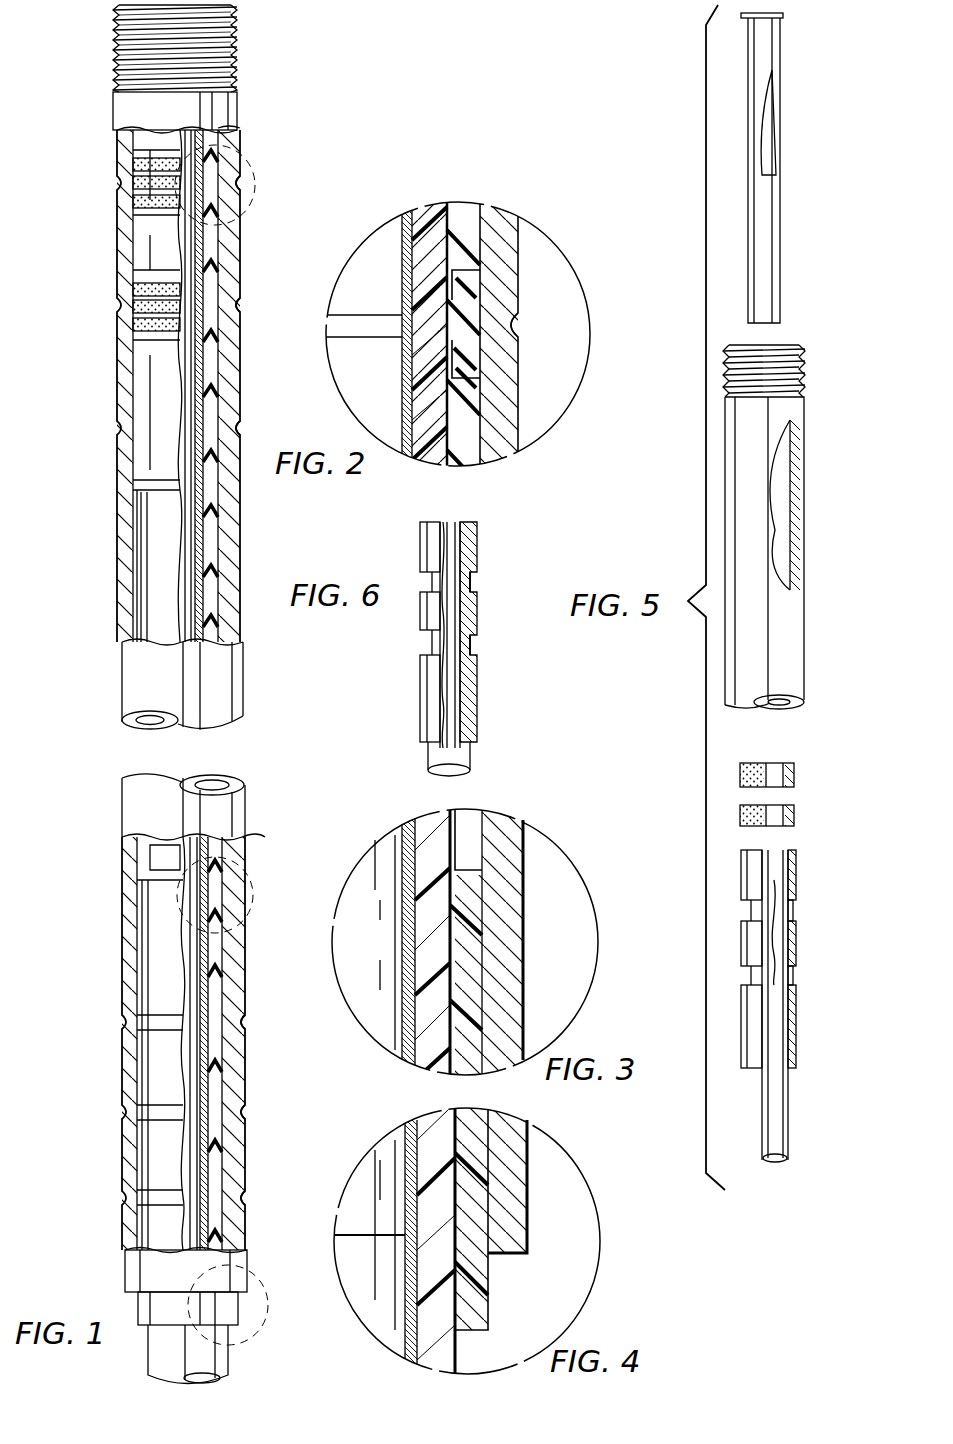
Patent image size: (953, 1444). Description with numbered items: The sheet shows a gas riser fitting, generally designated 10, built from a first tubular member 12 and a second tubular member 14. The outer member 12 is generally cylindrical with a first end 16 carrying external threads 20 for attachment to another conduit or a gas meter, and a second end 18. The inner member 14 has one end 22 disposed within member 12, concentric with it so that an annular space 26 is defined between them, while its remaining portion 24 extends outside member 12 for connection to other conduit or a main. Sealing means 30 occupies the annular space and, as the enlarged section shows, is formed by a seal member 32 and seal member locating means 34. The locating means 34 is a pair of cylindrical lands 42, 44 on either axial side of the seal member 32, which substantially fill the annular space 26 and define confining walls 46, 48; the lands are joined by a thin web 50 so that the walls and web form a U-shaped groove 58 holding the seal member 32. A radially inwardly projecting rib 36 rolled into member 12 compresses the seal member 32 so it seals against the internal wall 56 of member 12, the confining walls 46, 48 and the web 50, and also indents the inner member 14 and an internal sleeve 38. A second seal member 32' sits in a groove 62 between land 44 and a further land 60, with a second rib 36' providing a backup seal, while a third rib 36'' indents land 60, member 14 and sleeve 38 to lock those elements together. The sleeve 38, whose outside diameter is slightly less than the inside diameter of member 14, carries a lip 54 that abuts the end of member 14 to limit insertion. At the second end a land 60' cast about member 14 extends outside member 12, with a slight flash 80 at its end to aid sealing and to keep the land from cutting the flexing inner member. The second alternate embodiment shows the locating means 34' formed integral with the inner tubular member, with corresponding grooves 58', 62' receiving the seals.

In FIG. 1, the tool assembly 10 is at (281, 72).
In FIG. 1, the first tubular member 12 is at (125, 140).
In FIG. 2, the first tubular member 12 is at (500, 255).
In FIG. 3, the first tubular member 12 is at (500, 935).
In FIG. 4, the first tubular member 12 is at (505, 1225).
In FIG. 5, the first tubular member 12 is at (780, 422).
In FIG. 1, the second tubular member 14 is at (133, 690).
In FIG. 2, the second tubular member 14 is at (411, 322).
In FIG. 3, the second tubular member 14 is at (401, 945).
In FIG. 4, the second tubular member 14 is at (412, 1239).
In FIG. 5, the second tubular member 14 is at (797, 1006).
In FIG. 1, the first end 16 is at (137, 66).
In FIG. 5, the first end 16 is at (779, 381).
In FIG. 1, the second end 18 is at (140, 1270).
In FIG. 1, the external threads 20 is at (232, 68).
In FIG. 1, the end of tubular member 14 22 is at (155, 374).
In FIG. 1, the remaining portion of tubular member 14 24 is at (205, 1357).
In FIG. 1, the annular space 26 is at (138, 516).
In FIG. 1, the sealing means 30 is at (150, 215).
In FIG. 2, the sealing means 30 is at (430, 395).
In FIG. 1, the seal member 32 is at (210, 179).
In FIG. 2, the seal member 32 is at (440, 314).
In FIG. 5, the seal member 32 is at (791, 776).
In FIG. 1, the second seal member 32' is at (211, 306).
In FIG. 5, the second seal member 32' is at (794, 817).
In FIG. 2, the seal member locating means 34 is at (480, 327).
In FIG. 6, the seal member locating means 34' is at (493, 632).
In FIG. 1, the annular rib 36 is at (231, 185).
In FIG. 2, the annular rib 36 is at (533, 325).
In FIG. 1, the second annular rib 36' is at (263, 314).
In FIG. 1, the third annular rib 36'' is at (252, 811).
In FIG. 2, the internal sleeve 38 is at (407, 260).
In FIG. 3, the internal sleeve 38 is at (408, 948).
In FIG. 4, the internal sleeve 38 is at (407, 1229).
In FIG. 5, the internal sleeve 38 is at (778, 98).
In FIG. 1, the land 42 is at (205, 150).
In FIG. 2, the land 42 is at (462, 212).
In FIG. 5, the land 42 is at (796, 875).
In FIG. 1, the land 44 is at (205, 240).
In FIG. 2, the land 44 is at (470, 410).
In FIG. 5, the land 44 is at (796, 945).
In FIG. 2, the confining wall 46 is at (478, 278).
In FIG. 2, the confining wall 48 is at (470, 375).
In FIG. 2, the web 50 is at (435, 362).
In FIG. 5, the lip 54 is at (785, 18).
In FIG. 2, the internal wall 56 is at (468, 355).
In FIG. 5, the groove 58 is at (815, 913).
In FIG. 6, the groove (alternate) 58' is at (498, 581).
In FIG. 1, the land 60 is at (243, 363).
In FIG. 5, the land 60 is at (792, 1026).
In FIG. 1, the land 60' is at (236, 1049).
In FIG. 3, the land 60' is at (508, 962).
In FIG. 4, the land 60' is at (495, 1217).
In FIG. 5, the groove 62 is at (815, 982).
In FIG. 6, the second groove (alternate) 62' is at (495, 641).
In FIG. 3, the flash 80 is at (470, 830).
In FIG. 4, the flash 80 is at (460, 1335).